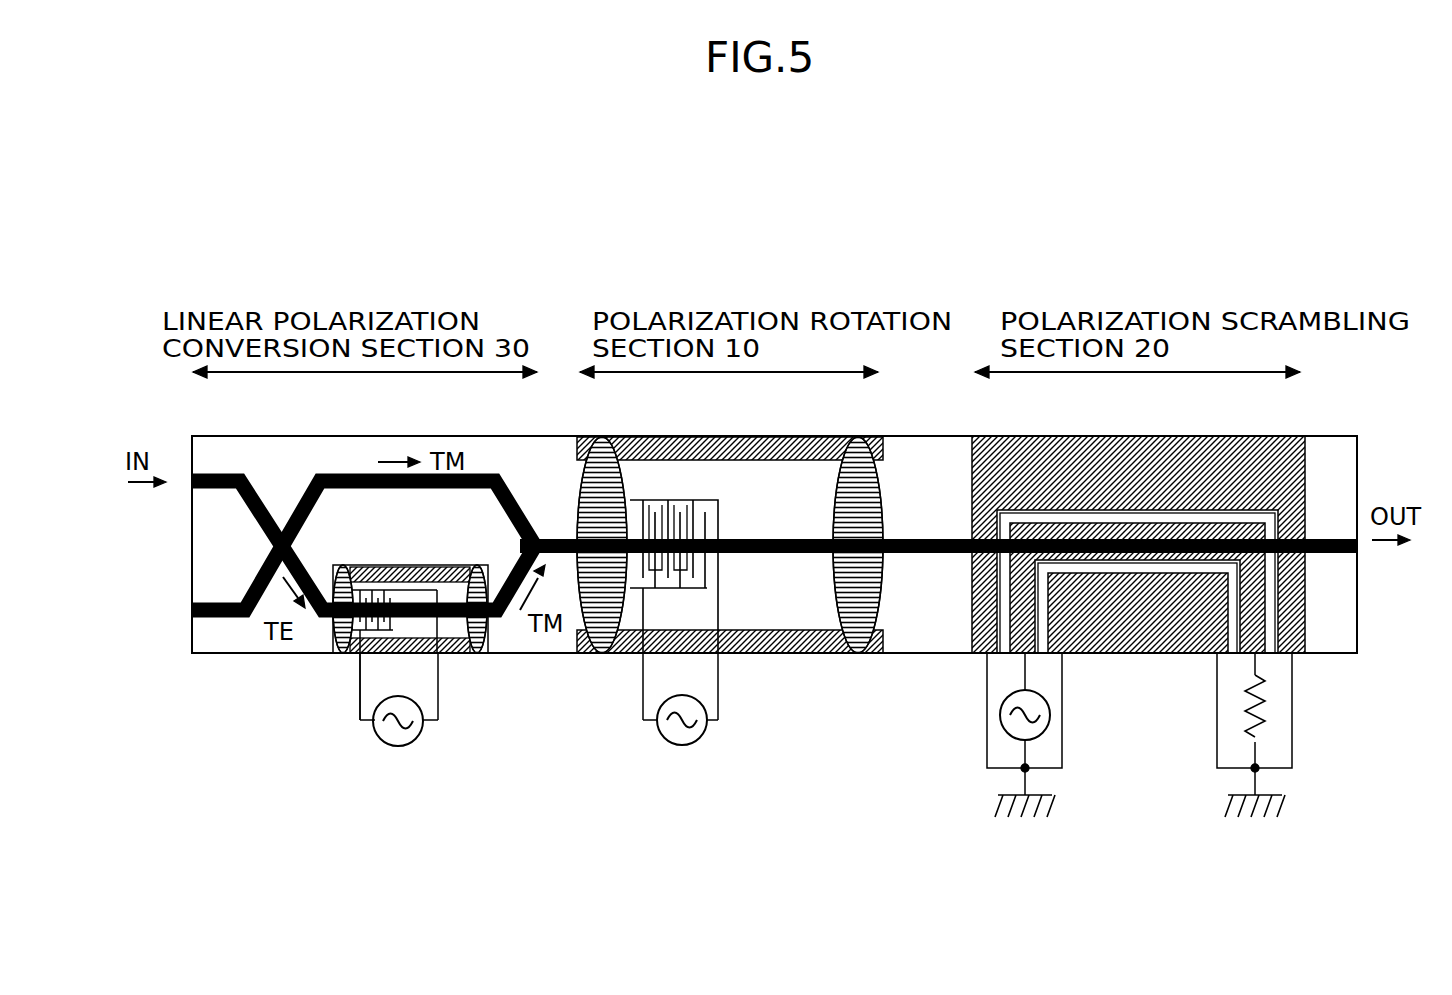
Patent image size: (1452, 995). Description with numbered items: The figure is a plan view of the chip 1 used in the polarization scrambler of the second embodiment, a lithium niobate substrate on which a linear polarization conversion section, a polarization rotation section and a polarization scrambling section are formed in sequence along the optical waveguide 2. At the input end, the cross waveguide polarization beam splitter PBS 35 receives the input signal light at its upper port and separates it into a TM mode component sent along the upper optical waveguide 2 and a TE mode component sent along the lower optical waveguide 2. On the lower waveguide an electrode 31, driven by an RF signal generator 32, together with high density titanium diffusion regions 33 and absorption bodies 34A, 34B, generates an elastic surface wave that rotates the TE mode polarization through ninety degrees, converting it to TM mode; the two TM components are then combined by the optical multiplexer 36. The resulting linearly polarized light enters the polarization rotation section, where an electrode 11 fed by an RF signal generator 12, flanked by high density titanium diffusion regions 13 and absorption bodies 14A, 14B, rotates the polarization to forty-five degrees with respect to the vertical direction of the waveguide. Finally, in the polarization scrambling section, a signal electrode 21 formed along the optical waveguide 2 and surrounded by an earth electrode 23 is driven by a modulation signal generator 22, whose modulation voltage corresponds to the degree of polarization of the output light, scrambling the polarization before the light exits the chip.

The chip 1 is at (192, 435).
The optical waveguide 2 is at (348, 472).
The PBS 35 is at (283, 530).
The optical multiplexer 36 is at (535, 538).
The electrode 31 is at (356, 584).
The high density titanium diffusion regions 33 is at (400, 565).
The absorption body 34A is at (345, 657).
The absorption body 34B is at (480, 657).
The RF signal generator 32 is at (411, 742).
The electrode 11 is at (718, 502).
The high density titanium diffusion regions 13 is at (715, 437).
The absorption body 14A is at (601, 437).
The absorption body 14B is at (857, 437).
The RF signal generator 12 is at (696, 742).
The signal electrode 21 is at (1243, 523).
The earth electrode 23 is at (995, 435).
The modulation signal generator 22 is at (999, 718).